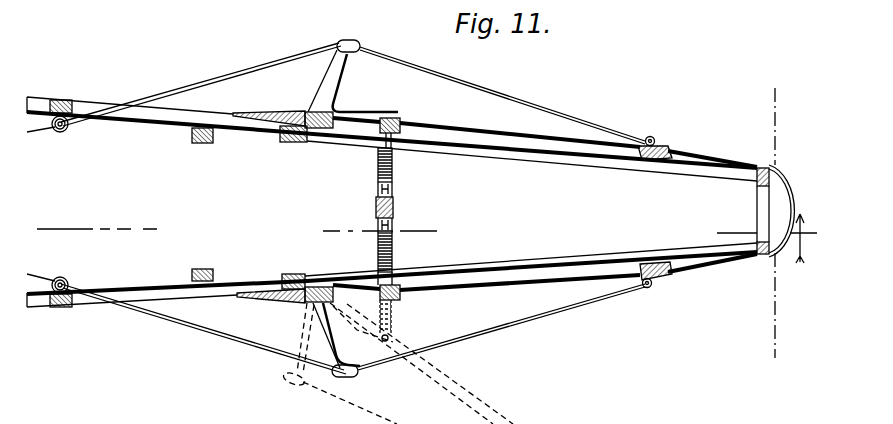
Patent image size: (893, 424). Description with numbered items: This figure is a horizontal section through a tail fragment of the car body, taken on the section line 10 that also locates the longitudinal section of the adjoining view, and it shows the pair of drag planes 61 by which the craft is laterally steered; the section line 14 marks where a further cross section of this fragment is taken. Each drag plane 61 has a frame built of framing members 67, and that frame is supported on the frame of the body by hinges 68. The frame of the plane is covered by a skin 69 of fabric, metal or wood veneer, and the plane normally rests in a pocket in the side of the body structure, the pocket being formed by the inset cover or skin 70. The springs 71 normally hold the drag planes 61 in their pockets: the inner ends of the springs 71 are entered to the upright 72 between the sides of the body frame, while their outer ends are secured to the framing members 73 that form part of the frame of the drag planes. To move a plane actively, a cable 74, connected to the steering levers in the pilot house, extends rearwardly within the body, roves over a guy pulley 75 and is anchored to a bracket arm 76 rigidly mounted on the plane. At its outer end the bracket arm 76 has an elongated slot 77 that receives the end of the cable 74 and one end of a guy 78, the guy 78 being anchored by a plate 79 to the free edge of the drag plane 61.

The section line 10 is at (430, 235).
The section line 14 is at (789, 221).
The drag plane 61 is at (489, 141).
The framing member 67 is at (638, 263).
The hinge 68 is at (307, 112).
The skin 69 is at (498, 291).
The inset cover or skin 70 is at (525, 270).
The spring 71 is at (393, 171).
The upright 72 is at (394, 208).
The framing member 73 is at (390, 120).
The cable 74 is at (203, 86).
The guy pulley 75 is at (65, 132).
The bracket arm 76 is at (333, 79).
The elongated slot 77 is at (349, 373).
The guy 78 is at (550, 112).
The plate 79 is at (655, 141).